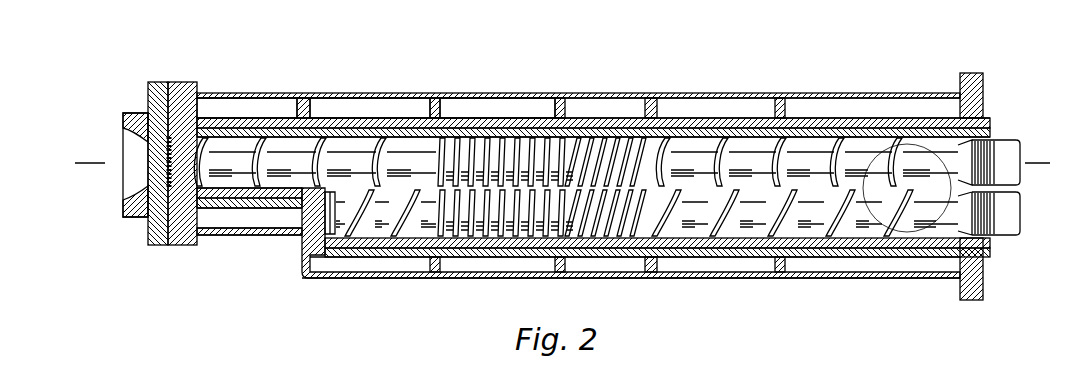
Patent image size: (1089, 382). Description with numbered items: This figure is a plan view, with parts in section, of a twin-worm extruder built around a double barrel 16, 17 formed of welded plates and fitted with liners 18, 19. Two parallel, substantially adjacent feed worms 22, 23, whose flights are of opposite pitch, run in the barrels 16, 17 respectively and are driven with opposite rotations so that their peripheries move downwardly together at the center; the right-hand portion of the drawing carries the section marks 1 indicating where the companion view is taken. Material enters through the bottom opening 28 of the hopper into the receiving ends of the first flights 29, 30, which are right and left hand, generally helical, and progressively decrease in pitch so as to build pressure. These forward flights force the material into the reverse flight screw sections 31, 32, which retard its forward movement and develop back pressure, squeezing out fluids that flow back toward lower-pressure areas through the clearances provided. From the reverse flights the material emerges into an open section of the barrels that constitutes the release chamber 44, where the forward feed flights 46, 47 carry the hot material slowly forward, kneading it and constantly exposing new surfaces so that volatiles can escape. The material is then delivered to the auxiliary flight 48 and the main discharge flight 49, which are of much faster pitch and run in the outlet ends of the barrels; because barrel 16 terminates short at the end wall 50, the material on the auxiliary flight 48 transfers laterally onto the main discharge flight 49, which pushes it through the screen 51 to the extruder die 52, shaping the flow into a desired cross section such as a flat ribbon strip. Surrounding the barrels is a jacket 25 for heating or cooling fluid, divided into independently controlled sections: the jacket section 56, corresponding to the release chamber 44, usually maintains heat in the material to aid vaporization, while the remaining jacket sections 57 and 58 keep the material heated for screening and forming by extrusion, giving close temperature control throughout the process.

The section line 1 is at (561, 164).
The barrel 16 is at (609, 238).
The barrel 17 is at (631, 128).
The liner 18 is at (686, 240).
The liner 19 is at (573, 158).
The feed worm 22 is at (704, 236).
The feed worm 23 is at (708, 145).
The jacket 25 is at (438, 100).
The bottom opening 28 is at (871, 232).
The first flight 29 is at (808, 232).
The first flight 30 is at (816, 150).
The reverse flight screw section 31 is at (622, 240).
The reverse flight screw section 32 is at (613, 146).
The release chamber 44 is at (404, 234).
The forward feed flight 46 is at (514, 234).
The forward feed flight 47 is at (513, 150).
The auxiliary flight 48 is at (398, 232).
The main discharge flight 49 is at (317, 150).
The end wall 50 is at (338, 234).
The screen 51 is at (198, 106).
The extruder die 52 is at (165, 140).
The jacket section 56 is at (470, 108).
The jacket section 57 is at (372, 108).
The jacket section 58 is at (251, 108).